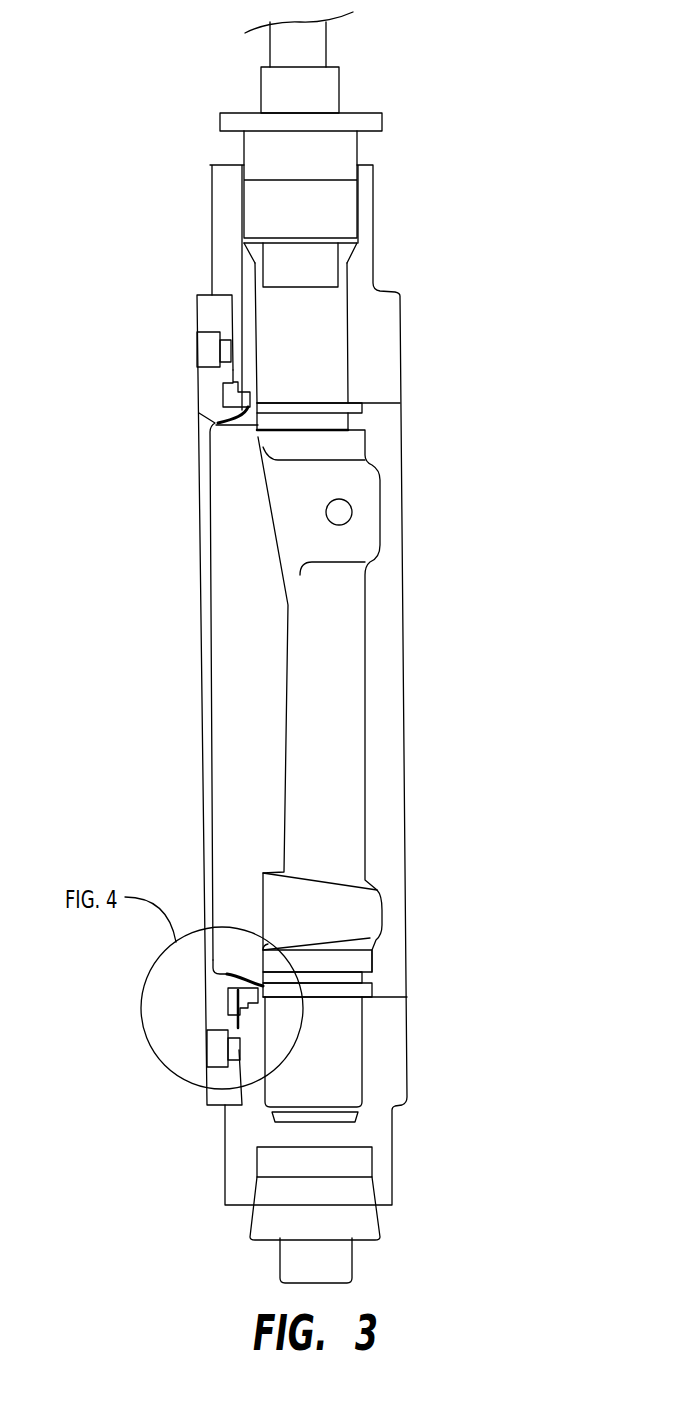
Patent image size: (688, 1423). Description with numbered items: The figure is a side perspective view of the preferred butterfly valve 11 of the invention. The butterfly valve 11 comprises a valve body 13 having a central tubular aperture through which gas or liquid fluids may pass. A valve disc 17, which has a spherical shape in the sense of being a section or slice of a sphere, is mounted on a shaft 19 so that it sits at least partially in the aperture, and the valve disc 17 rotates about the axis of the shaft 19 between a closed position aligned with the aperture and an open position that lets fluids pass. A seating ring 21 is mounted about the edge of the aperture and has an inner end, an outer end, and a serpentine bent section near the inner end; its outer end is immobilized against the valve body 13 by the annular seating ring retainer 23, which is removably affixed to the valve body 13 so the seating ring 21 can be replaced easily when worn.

The butterfly valve 11 is at (387, 272).
The valve body 13 is at (248, 1140).
The valve disc 17 is at (225, 481).
The shaft 19 is at (297, 270).
The seating ring 21 is at (240, 998).
The seating ring retainer 23 is at (220, 1082).